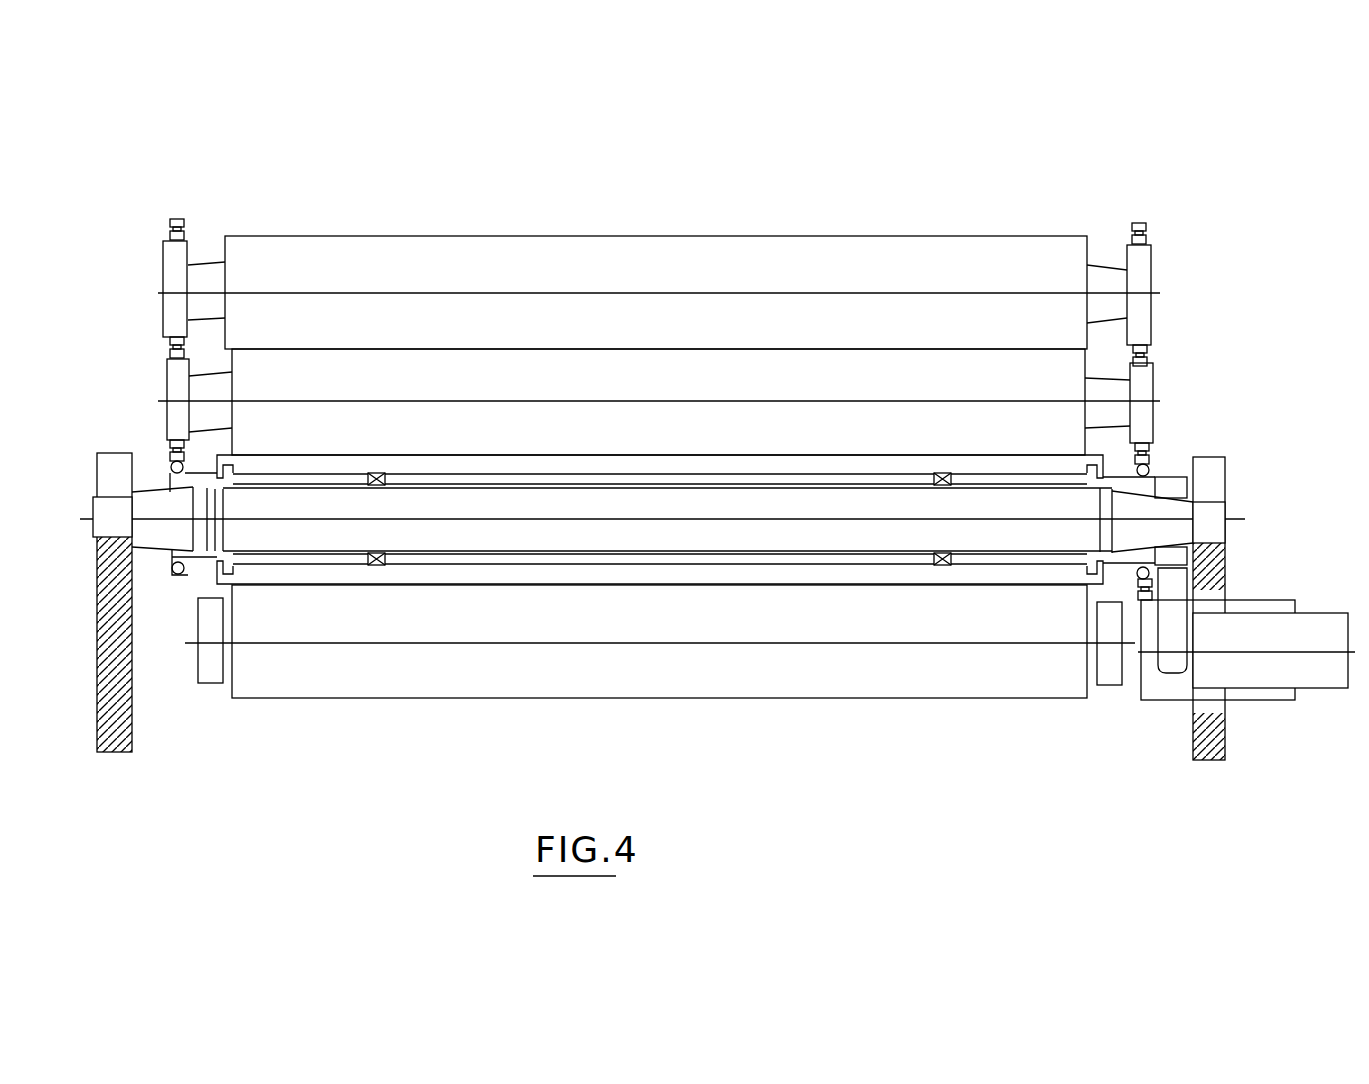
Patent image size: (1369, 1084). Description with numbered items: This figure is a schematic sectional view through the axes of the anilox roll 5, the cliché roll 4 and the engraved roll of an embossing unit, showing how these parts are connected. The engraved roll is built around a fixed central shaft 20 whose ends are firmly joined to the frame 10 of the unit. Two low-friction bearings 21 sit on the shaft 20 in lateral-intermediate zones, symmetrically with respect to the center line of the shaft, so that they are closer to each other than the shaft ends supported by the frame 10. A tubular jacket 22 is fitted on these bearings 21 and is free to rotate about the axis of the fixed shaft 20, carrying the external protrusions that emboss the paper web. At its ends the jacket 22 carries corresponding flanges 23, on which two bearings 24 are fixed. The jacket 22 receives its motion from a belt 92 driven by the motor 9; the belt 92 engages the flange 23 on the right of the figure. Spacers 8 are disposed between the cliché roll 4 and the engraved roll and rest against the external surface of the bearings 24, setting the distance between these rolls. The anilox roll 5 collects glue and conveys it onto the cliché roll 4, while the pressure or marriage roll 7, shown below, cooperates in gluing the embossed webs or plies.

The cliché roll 4 is at (540, 385).
The anilox roll 5 is at (747, 272).
The pressure or marriage roll 7 is at (494, 689).
The spacers 8 is at (163, 228).
The motor 9 is at (1323, 686).
The frame 10 is at (100, 660).
The fixed central shaft 20 is at (462, 537).
The bearings 21 is at (397, 473).
The tubular jacket 22 is at (287, 465).
The flanges 23 is at (200, 568).
The bearings 24 is at (166, 469).
The belt 92 is at (1173, 668).